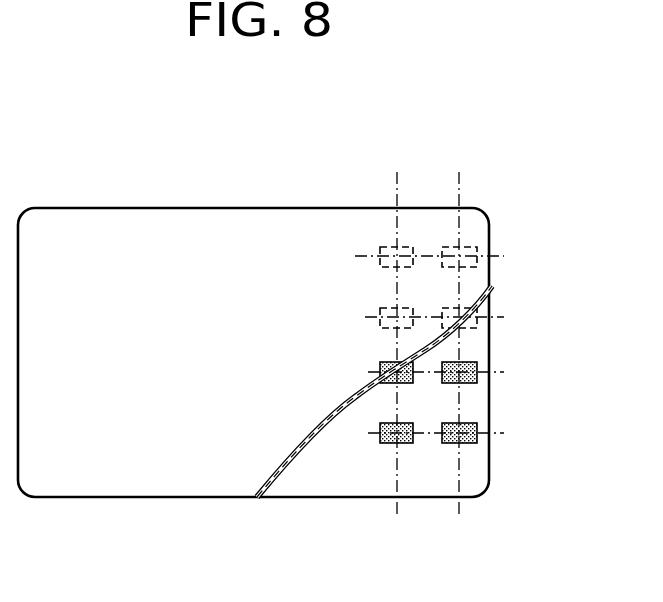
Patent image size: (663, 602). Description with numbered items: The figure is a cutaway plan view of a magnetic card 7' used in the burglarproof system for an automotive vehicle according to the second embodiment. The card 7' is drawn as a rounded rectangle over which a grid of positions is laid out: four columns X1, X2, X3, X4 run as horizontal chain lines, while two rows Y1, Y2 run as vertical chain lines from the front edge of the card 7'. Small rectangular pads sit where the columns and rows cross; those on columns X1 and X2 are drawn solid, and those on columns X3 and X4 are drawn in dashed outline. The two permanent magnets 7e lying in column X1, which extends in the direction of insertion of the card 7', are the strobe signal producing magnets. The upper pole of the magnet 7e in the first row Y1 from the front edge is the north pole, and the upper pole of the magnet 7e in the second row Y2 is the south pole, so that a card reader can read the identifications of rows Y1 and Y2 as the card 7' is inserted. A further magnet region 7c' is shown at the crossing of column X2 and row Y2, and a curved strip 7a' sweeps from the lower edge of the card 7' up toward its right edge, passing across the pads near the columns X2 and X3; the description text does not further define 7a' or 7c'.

The magnetic card 7' is at (253, 318).
The curved strip-like recorded track 7a' is at (374, 421).
The recorded mark (solid region) 7c' is at (517, 394).
The strobe signal producing magnet 7e is at (466, 443).
The column X1 is at (454, 435).
The scan position line X2 is at (454, 374).
The scan position line X3 is at (453, 319).
The scan position line X4 is at (448, 258).
The first row Y1 is at (404, 326).
The second row Y2 is at (466, 326).